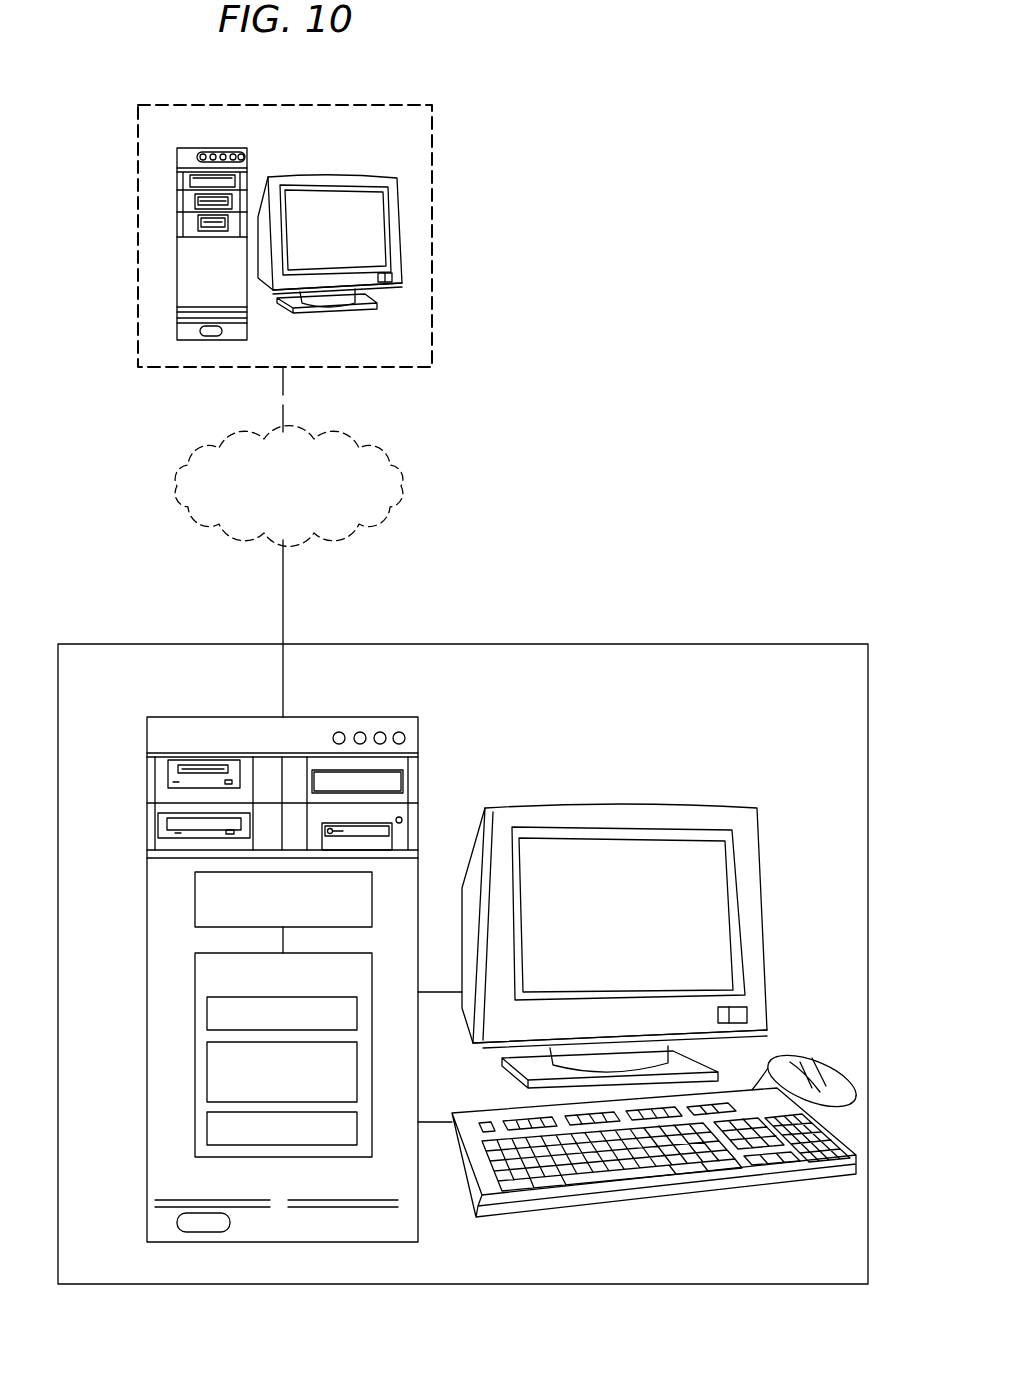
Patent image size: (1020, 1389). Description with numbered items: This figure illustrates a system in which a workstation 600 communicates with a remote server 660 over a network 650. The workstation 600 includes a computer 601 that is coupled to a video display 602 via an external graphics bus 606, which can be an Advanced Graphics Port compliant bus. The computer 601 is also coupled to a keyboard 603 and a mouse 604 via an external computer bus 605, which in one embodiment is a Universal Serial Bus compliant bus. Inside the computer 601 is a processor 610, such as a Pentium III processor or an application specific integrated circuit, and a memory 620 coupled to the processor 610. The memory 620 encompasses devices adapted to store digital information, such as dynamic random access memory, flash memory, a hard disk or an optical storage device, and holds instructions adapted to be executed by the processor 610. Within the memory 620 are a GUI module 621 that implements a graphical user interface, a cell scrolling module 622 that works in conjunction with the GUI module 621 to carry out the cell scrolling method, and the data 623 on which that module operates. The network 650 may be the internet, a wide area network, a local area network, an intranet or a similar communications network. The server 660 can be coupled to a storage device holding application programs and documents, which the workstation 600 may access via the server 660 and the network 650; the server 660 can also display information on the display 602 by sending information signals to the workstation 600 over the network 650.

The workstation 600 is at (753, 644).
The computer 601 is at (222, 722).
The video display 602 is at (610, 810).
The keyboard 603 is at (686, 1185).
The mouse 604 is at (838, 1070).
The external computer bus 605 is at (433, 1125).
The external graphics bus 606 is at (433, 993).
The processor 610 is at (195, 898).
The memory 620 is at (195, 965).
The GUI module 621 is at (207, 1012).
The cell scrolling module 622 is at (207, 1078).
The data 623 is at (207, 1122).
The network 650 is at (195, 468).
The server 660 is at (218, 105).